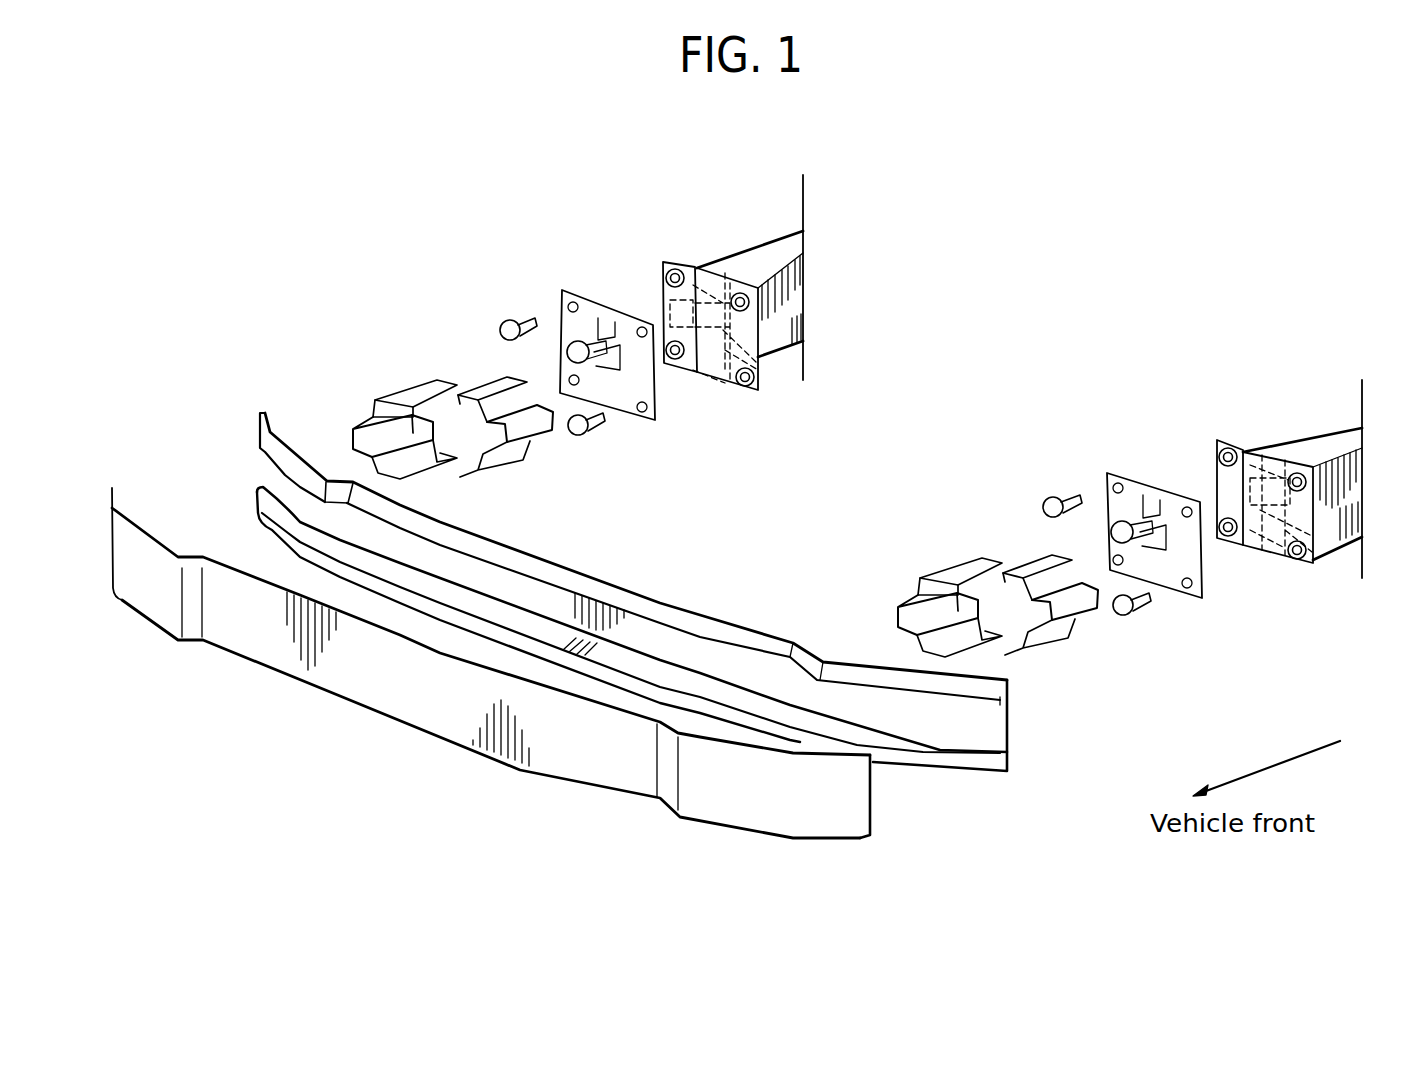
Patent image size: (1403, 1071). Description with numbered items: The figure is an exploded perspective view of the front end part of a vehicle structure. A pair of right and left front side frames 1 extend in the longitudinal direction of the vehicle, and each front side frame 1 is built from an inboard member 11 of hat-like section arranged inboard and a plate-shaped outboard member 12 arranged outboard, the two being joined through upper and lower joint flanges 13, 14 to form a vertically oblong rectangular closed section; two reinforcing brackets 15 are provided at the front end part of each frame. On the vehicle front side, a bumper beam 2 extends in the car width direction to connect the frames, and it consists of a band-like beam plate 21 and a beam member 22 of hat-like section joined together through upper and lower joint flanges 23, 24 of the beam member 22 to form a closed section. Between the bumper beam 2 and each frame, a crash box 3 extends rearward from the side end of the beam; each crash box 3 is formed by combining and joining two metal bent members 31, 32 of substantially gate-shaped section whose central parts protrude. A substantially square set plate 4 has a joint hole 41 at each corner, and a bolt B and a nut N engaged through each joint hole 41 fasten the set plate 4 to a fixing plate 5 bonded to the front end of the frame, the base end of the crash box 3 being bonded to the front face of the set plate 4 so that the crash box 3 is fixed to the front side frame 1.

The front side frame 1 is at (988, 382).
The inboard member 11 is at (780, 270).
The outboard member 12 is at (705, 262).
The upper joint flange 13 is at (793, 247).
The lower joint flange 14 is at (783, 358).
The reinforcing bracket 15 is at (660, 287).
The nut N is at (680, 268).
The bumper beam 2 is at (565, 671).
The beam plate 21 is at (523, 681).
The beam member 22 is at (987, 733).
The upper joint flange 23 is at (850, 672).
The lower joint flange 24 is at (898, 764).
The crash box 3 is at (725, 475).
The bent member 31 is at (408, 392).
The bent member 32 is at (726, 499).
The set plate 4 is at (580, 303).
The joint hole 41 is at (563, 306).
The fixing plate 5 is at (688, 374).
The bolt B is at (502, 321).